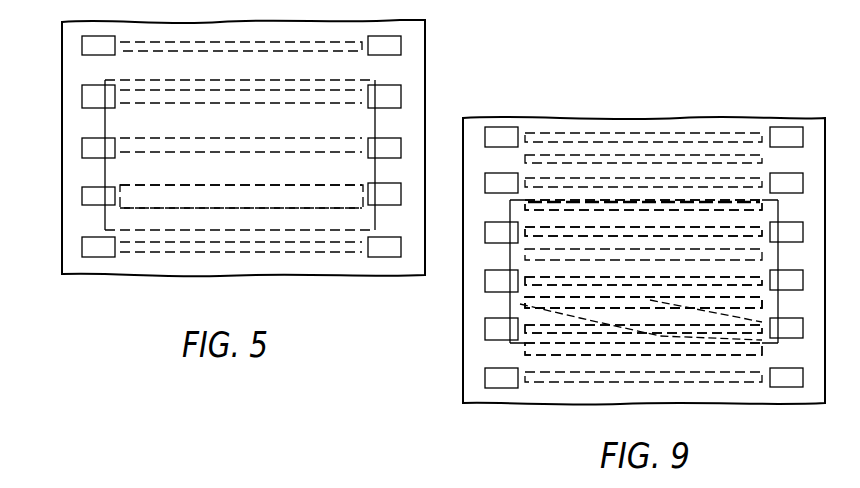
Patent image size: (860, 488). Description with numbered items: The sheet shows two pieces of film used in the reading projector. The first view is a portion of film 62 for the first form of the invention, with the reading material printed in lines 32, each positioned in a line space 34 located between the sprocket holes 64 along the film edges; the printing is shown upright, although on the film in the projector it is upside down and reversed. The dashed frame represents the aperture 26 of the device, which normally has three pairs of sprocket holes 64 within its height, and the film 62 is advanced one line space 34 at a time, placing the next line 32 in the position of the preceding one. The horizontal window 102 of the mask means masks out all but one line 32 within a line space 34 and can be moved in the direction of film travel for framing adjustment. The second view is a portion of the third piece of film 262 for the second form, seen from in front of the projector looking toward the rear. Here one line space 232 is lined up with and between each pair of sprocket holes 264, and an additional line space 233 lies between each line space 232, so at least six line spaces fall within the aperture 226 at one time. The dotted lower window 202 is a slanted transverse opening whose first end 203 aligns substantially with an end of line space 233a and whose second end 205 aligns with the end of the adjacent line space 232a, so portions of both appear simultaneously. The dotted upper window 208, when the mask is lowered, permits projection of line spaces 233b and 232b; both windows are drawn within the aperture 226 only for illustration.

In FIG. 5, the film 62 is at (176, 280).
In FIG. 5, the sprocket holes 64 is at (82, 42).
In FIG. 5, the aperture 26 is at (373, 127).
In FIG. 5, the line space 34 is at (305, 42).
In FIG. 5, the line of reading material 32 is at (246, 103).
In FIG. 5, the horizontal window 102 is at (148, 185).
In FIG. 9, the film 262 is at (487, 406).
In FIG. 9, the sprocket holes 264 is at (500, 127).
In FIG. 9, the line space 232 is at (614, 132).
In FIG. 9, the additional line space 233 is at (525, 160).
In FIG. 9, the line space 233b is at (522, 204).
In FIG. 9, the aperture 226 is at (778, 205).
In FIG. 9, the line space 232b is at (530, 262).
In FIG. 9, the upper window 208 is at (520, 278).
In FIG. 9, the line space 233a is at (528, 300).
In FIG. 9, the first end 203 is at (512, 314).
In FIG. 9, the line space 232a is at (528, 346).
In FIG. 9, the second end 205 is at (762, 321).
In FIG. 9, the lower window 202 is at (578, 318).